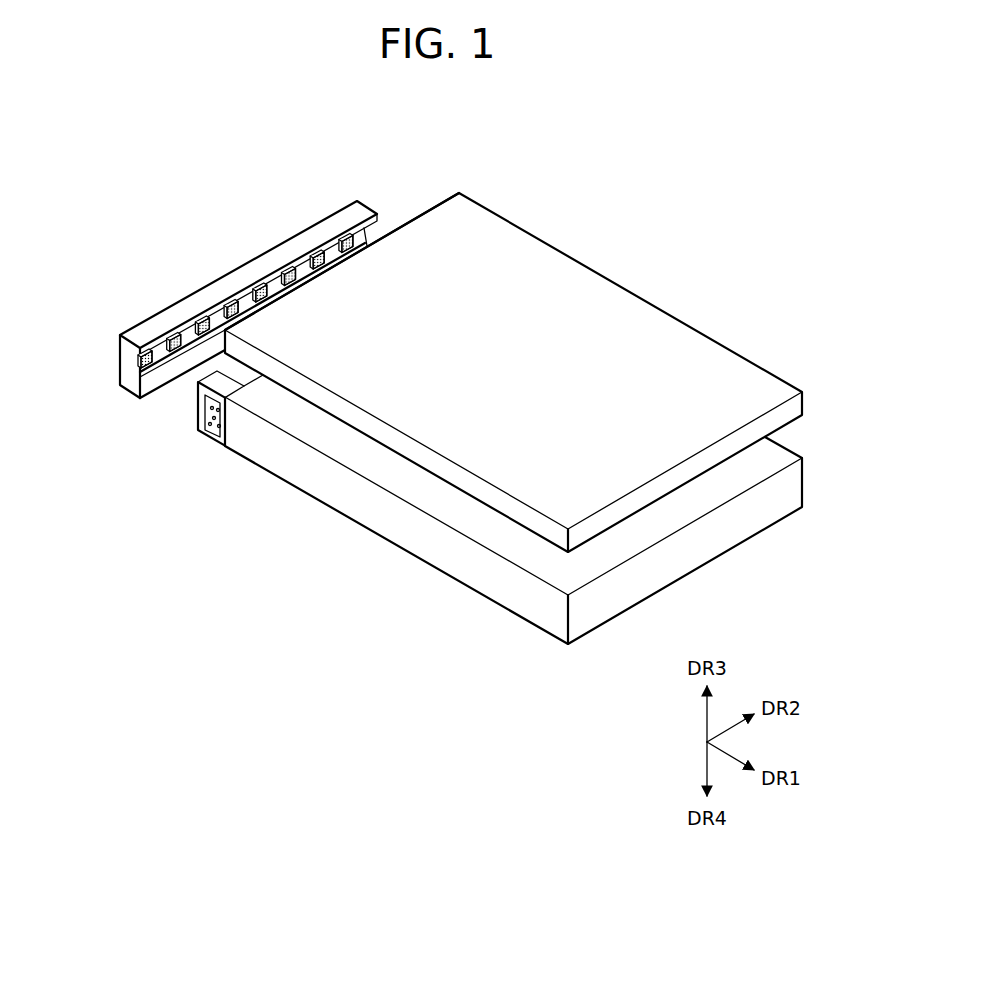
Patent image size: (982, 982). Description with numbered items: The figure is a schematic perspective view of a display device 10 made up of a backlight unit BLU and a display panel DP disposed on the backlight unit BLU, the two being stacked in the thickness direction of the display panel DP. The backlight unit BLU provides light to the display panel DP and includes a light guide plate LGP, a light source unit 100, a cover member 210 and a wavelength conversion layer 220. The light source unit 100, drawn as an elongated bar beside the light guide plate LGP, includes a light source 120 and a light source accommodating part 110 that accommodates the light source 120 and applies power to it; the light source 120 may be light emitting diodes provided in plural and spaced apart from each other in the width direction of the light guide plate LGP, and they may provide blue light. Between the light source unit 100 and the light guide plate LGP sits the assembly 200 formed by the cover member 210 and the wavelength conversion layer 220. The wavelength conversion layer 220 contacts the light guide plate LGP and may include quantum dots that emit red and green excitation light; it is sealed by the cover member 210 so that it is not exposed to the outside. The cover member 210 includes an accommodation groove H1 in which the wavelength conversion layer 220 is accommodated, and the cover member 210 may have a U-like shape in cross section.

The display device 10 is at (427, 418).
The display panel DP is at (535, 248).
The backlight unit BLU is at (427, 422).
The light guide plate LGP is at (318, 490).
The light source unit 100 is at (215, 352).
The light source accommodating part 110 is at (203, 348).
The light source 120 is at (122, 350).
The light source member 200 is at (200, 471).
The cover member 210 is at (181, 463).
The wavelength conversion layer 220 is at (221, 423).
The accommodation groove H1 is at (199, 403).